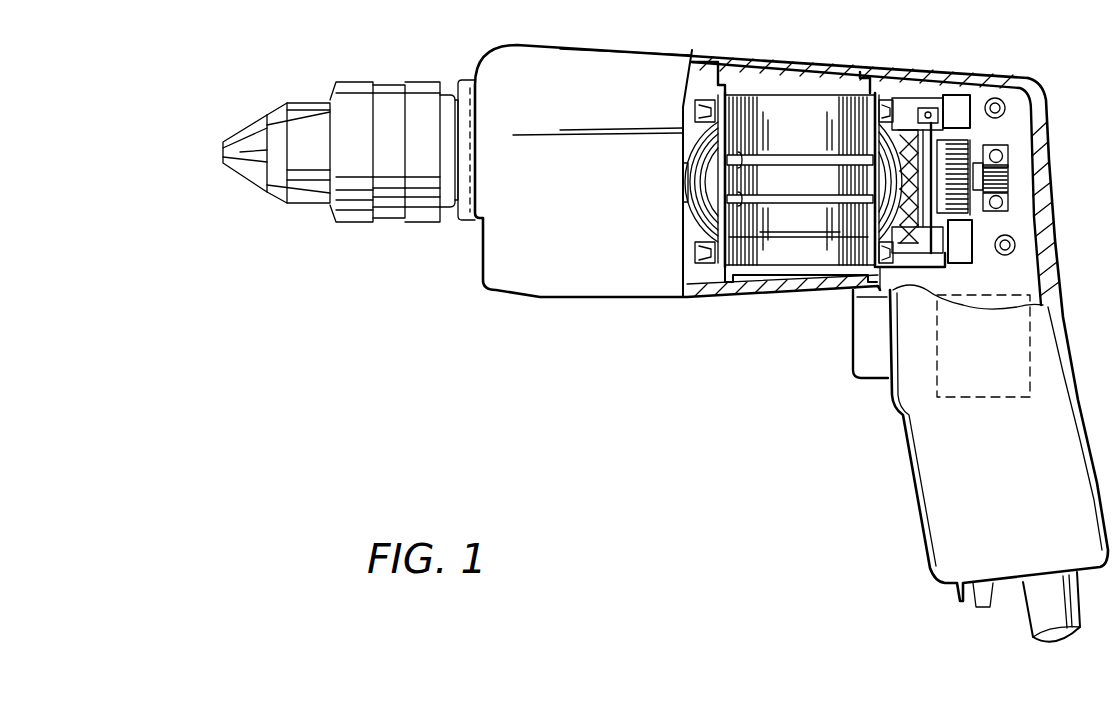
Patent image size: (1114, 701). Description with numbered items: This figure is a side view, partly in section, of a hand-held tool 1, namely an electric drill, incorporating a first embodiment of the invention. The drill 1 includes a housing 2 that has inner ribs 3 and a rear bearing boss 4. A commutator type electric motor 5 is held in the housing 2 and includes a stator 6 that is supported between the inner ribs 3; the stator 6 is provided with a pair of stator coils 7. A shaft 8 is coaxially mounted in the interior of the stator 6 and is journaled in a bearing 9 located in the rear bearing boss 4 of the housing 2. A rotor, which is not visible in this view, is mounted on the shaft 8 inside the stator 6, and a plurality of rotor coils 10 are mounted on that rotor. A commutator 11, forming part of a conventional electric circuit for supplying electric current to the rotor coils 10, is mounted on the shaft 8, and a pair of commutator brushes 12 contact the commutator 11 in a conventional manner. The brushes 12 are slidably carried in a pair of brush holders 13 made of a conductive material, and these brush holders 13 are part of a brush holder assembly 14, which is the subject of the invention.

The hand-held tool 1 is at (565, 60).
The housing 2 is at (770, 55).
The inner ribs 3 is at (720, 76).
The rear bearing boss 4 is at (1005, 125).
The commutator type electric motor 5 is at (772, 258).
The stator 6 is at (802, 258).
The stator coils 7 is at (692, 135).
The shaft 8 is at (680, 183).
The bearing 9 is at (1010, 203).
The rotor coils 10 is at (900, 100).
The commutator 11 is at (1008, 176).
The commutator brushes 12 is at (985, 145).
The brush holders 13 is at (955, 103).
The brush holder assembly 14 is at (922, 268).